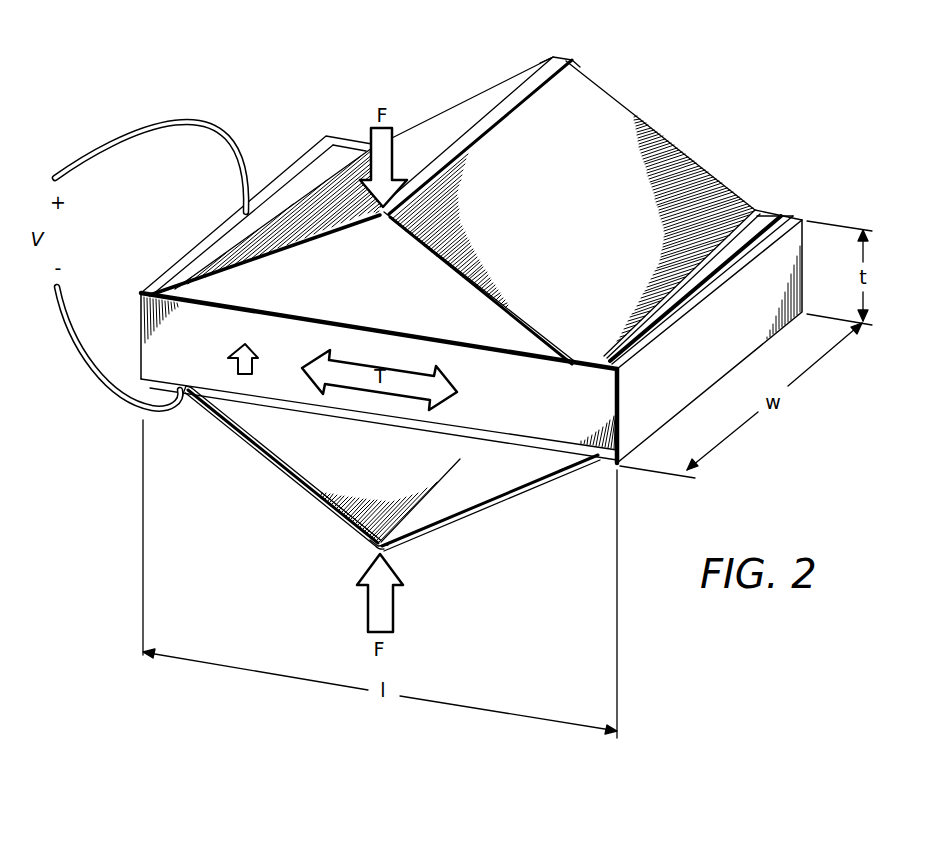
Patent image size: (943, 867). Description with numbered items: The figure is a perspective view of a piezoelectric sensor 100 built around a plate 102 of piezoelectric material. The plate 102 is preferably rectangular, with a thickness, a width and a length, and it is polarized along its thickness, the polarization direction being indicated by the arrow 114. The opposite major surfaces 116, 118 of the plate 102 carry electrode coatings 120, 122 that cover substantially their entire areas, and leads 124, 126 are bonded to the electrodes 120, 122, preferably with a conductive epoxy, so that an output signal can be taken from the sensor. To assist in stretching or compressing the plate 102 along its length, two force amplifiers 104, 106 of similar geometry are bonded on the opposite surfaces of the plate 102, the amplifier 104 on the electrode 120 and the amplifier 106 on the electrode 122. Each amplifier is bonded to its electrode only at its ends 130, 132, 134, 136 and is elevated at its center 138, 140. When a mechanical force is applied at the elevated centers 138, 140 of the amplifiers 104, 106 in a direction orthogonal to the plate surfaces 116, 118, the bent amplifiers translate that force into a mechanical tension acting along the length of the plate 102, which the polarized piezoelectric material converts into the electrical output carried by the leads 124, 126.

The piezoelectric sensor 100 is at (736, 112).
The plate 102 is at (135, 322).
The force amplifier 104 is at (622, 96).
The force amplifier 106 is at (458, 519).
The arrow 114 is at (245, 376).
The major surface 116 is at (473, 356).
The major surface 118 is at (290, 397).
The electrode coating 120 is at (782, 215).
The electrode coating 122 is at (640, 442).
The lead 124 is at (156, 127).
The lead 126 is at (97, 377).
The end of force amplifier 130 is at (758, 212).
The end of force amplifier 132 is at (353, 140).
The end of force amplifier 134 is at (577, 466).
The end of force amplifier 136 is at (182, 395).
The elevated center 138 is at (565, 57).
The elevated center 140 is at (375, 552).